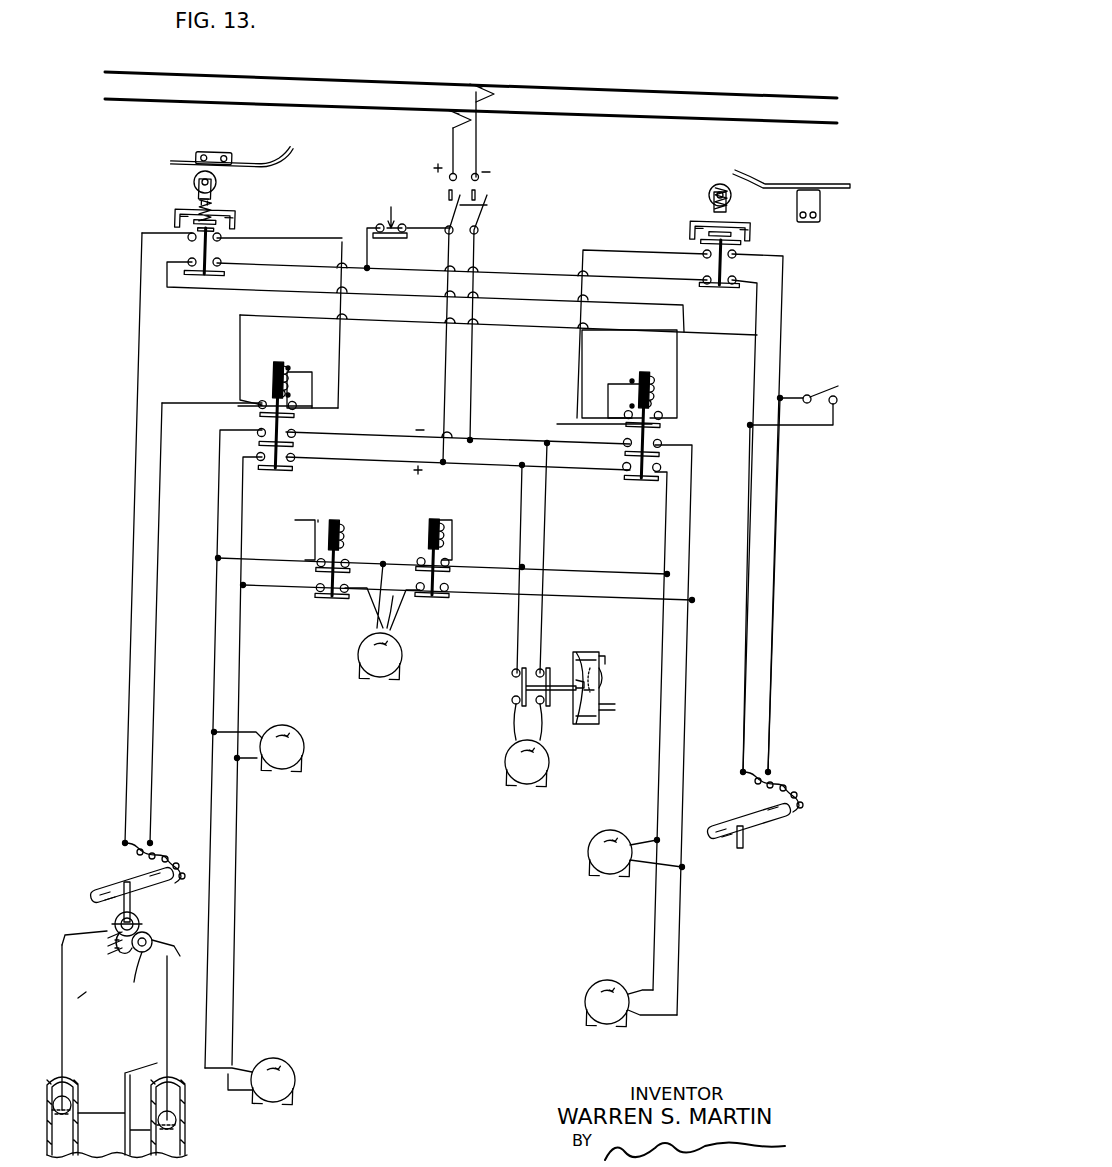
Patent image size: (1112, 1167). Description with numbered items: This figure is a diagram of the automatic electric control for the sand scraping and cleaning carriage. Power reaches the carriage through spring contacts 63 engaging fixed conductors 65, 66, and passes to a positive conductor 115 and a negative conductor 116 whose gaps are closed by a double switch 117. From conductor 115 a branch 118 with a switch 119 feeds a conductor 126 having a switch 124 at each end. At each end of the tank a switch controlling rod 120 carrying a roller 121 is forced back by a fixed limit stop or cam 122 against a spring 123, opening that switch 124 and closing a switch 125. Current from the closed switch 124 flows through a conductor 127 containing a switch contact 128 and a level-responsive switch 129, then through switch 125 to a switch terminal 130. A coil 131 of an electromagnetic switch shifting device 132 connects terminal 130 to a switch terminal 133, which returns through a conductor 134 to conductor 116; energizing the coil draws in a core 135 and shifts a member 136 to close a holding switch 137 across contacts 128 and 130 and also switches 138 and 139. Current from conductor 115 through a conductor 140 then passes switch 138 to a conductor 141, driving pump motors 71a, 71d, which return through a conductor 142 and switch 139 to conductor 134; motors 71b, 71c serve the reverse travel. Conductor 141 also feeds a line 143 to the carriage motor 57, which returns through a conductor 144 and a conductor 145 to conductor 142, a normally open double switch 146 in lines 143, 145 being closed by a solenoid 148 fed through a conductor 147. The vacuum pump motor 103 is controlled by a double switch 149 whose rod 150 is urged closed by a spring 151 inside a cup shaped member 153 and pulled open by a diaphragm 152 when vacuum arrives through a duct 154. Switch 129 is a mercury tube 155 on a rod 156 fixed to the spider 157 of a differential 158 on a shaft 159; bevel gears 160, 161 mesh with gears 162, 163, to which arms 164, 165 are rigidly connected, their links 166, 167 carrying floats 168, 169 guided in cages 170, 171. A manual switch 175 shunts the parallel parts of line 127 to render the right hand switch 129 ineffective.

The conductor 66 is at (630, 84).
The conductor 65 is at (656, 112).
The spring contacts 63 is at (488, 88).
The conductor 115 is at (446, 152).
The conductor 116 is at (488, 149).
The double switch 117 is at (490, 208).
The branch 118 is at (432, 214).
The switch 119 is at (376, 222).
The limit stop or cam 122 is at (286, 162).
The roller 121 is at (220, 182).
The spring 123 is at (220, 213).
The switch controlling member or rod 120 is at (212, 250).
The switch 125 is at (188, 237).
The switch 124 is at (222, 266).
The conductor 126 is at (518, 262).
The conductor 127 is at (508, 330).
The switch contact 128 is at (255, 405).
The switch terminal 130 is at (289, 368).
The core 135 is at (276, 362).
The coil 131 is at (280, 368).
The electromagnetic switch shifting device 132 is at (263, 375).
The switch 137 is at (251, 415).
The switch 139 is at (252, 434).
The member 136 is at (260, 450).
The switch terminal 133 is at (294, 434).
The switch 138 is at (290, 466).
The conductor 134 is at (498, 432).
The conductor 140 is at (500, 466).
The conductor 141 is at (260, 506).
The solenoid 148 is at (332, 515).
The conductor 147 is at (290, 526).
The conductor 145 is at (290, 548).
The line 143 is at (256, 590).
The double switch 146 is at (319, 604).
The conductor 144 is at (396, 604).
The motor 57 is at (358, 658).
The double switch 149 is at (510, 690).
The diaphragm 152 is at (568, 700).
The switch controlling member 150 is at (562, 668).
The cup shaped member 153 is at (600, 658).
The spring 151 is at (600, 674).
The duct 154 is at (608, 712).
The motor 103 is at (510, 764).
The motor 71a is at (306, 752).
The motor 71b is at (586, 856).
The motor 71c is at (584, 1006).
The motor 71d is at (290, 1068).
The conductor 142 is at (206, 754).
The switch 129 is at (107, 863).
The tube 155 is at (96, 882).
The rod 156 is at (135, 896).
The bevel gear 160 is at (140, 918).
The differential 158 is at (147, 922).
The bevel gear 163 is at (154, 942).
The bevel gear 162 is at (104, 948).
The spider 157 is at (122, 960).
The shaft 159 is at (142, 988).
The arm 164 is at (76, 922).
The arm 165 is at (172, 954).
The link 166 is at (64, 1036).
The link 167 is at (166, 1052).
The guide or cage 170 is at (80, 1090).
The float 168 is at (72, 1106).
The guide or cage 171 is at (185, 1110).
The float 169 is at (177, 1126).
The bevel gear 161 is at (97, 1003).
The manual switch 175 is at (815, 385).